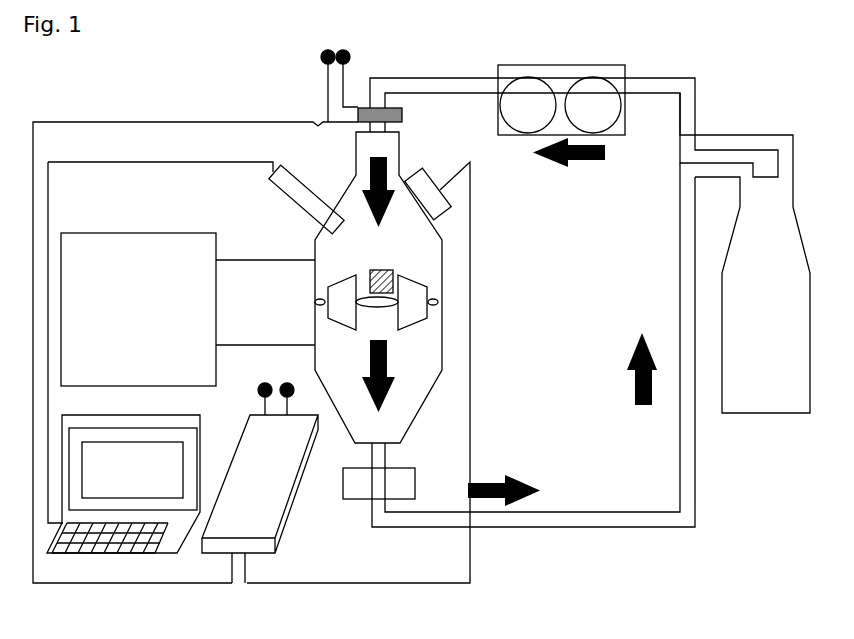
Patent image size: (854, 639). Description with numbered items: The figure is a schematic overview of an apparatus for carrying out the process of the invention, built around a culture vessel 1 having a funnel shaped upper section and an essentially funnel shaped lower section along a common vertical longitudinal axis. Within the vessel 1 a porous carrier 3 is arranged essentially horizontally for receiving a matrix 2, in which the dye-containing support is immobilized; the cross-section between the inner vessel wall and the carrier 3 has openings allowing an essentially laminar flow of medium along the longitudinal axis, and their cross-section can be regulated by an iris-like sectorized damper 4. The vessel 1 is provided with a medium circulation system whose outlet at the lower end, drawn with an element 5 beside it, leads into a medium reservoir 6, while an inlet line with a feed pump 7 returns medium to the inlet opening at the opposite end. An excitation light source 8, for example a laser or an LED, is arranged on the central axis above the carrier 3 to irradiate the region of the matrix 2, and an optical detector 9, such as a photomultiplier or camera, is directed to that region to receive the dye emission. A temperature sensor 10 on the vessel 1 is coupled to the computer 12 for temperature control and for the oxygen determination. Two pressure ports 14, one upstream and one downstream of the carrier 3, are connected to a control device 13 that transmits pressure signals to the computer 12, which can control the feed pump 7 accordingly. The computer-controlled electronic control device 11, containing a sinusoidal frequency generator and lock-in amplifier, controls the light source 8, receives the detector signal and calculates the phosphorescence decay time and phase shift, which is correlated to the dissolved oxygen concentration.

The culture vessel 1 is at (338, 190).
The matrix 2 is at (395, 270).
The porous carrier 3 is at (382, 311).
The sectorized damper 4 is at (323, 302).
The outlet valve 5 is at (364, 483).
The medium reservoir 6 is at (766, 310).
The feed pump 7 is at (497, 112).
The excitation light source 8 is at (404, 114).
The optical detector 9 is at (424, 163).
The temperature sensor 10 is at (303, 183).
The computer-controlled electronic control device 11 is at (256, 511).
The computer 12 is at (180, 543).
The control device 13 is at (138, 309).
The pressure ports 14 is at (310, 336).